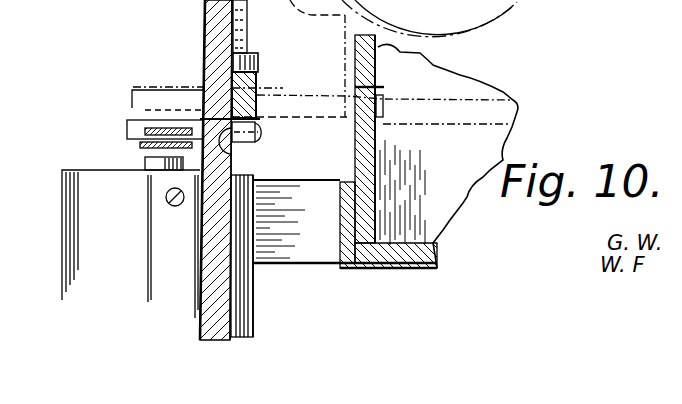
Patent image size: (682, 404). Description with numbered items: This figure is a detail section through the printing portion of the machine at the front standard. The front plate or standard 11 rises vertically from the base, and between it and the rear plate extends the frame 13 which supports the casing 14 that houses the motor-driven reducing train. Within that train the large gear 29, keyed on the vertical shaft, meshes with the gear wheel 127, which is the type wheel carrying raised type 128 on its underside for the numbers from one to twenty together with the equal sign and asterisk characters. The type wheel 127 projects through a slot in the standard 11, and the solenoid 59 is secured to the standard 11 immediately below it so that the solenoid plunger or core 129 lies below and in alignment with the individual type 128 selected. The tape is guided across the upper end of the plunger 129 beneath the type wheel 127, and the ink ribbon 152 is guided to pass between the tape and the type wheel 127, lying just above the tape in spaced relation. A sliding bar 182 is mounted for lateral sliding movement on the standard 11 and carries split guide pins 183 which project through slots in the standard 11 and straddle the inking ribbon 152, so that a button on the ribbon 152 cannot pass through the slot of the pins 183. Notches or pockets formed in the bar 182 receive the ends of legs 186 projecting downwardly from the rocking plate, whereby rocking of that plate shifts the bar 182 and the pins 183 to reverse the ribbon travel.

The front plate 11 is at (203, 30).
The frame 13 is at (303, 250).
The casing 14 is at (375, 266).
The large gear 29 is at (467, 100).
The solenoid 59 is at (70, 262).
The gear wheel 127 is at (280, 98).
The raised type 128 is at (147, 108).
The solenoid plunger 129 is at (145, 160).
The ink ribbon 152 is at (147, 127).
The sliding bar 182 is at (255, 104).
The split guide pins 183 is at (233, 152).
The legs 186 is at (243, 53).